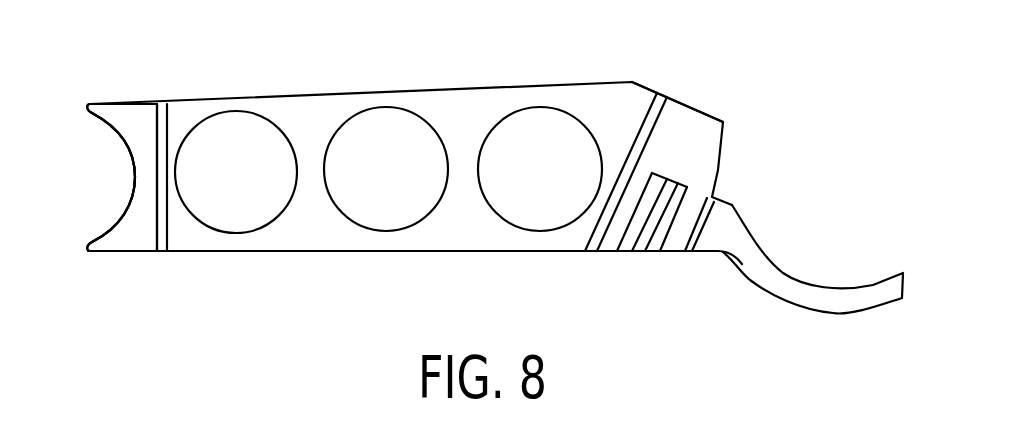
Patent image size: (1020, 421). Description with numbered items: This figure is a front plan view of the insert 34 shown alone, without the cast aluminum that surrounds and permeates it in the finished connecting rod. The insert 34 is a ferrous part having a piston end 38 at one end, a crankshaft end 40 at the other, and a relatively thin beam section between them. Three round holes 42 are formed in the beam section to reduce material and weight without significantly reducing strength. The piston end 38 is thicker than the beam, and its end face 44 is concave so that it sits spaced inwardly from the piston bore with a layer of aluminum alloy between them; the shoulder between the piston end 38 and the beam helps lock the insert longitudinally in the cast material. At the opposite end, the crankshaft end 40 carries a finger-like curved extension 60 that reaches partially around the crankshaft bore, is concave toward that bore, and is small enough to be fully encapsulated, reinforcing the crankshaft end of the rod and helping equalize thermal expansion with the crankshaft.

The insert 34 is at (370, 76).
The piston end 38 is at (130, 102).
The end face 44 is at (123, 147).
The holes 42 is at (545, 226).
The crankshaft end 40 is at (693, 106).
The curved extension 60 is at (837, 314).